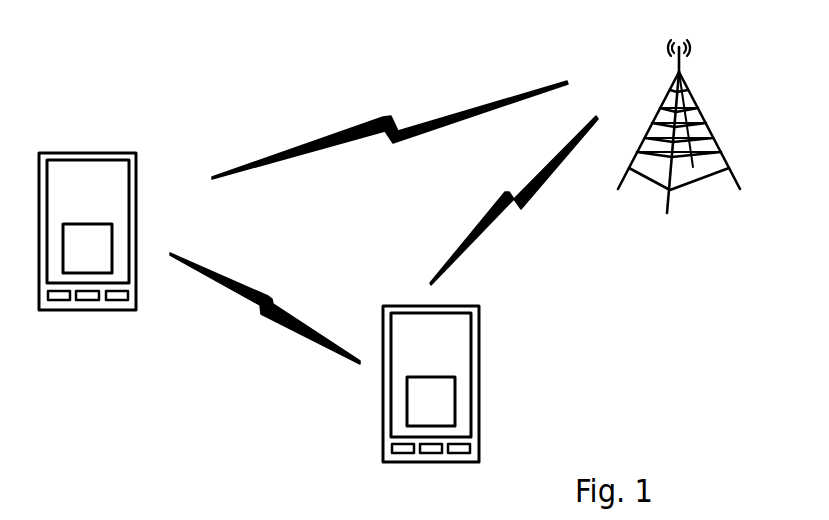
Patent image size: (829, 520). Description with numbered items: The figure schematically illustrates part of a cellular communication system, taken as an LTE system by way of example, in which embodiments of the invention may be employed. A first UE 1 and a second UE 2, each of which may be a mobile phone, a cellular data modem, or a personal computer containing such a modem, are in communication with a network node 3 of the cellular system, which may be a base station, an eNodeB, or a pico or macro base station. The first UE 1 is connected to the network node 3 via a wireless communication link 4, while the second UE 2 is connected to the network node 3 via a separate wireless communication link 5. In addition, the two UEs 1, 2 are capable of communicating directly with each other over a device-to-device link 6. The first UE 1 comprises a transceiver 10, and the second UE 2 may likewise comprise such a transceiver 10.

The first UE 1 is at (90, 178).
The second UE 2 is at (478, 377).
The network node 3 is at (713, 137).
The wireless communication link 4 is at (387, 137).
The wireless communication link 5 is at (523, 210).
The direct wireless link between devices 6 is at (270, 320).
The transceiver 10 is at (102, 259).